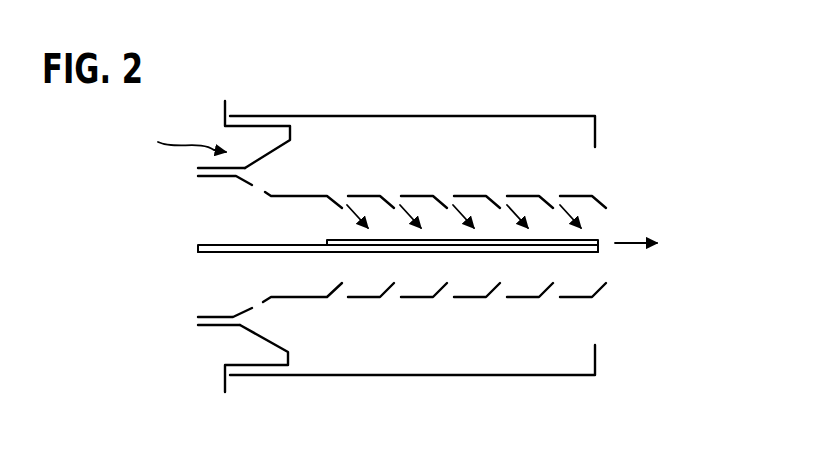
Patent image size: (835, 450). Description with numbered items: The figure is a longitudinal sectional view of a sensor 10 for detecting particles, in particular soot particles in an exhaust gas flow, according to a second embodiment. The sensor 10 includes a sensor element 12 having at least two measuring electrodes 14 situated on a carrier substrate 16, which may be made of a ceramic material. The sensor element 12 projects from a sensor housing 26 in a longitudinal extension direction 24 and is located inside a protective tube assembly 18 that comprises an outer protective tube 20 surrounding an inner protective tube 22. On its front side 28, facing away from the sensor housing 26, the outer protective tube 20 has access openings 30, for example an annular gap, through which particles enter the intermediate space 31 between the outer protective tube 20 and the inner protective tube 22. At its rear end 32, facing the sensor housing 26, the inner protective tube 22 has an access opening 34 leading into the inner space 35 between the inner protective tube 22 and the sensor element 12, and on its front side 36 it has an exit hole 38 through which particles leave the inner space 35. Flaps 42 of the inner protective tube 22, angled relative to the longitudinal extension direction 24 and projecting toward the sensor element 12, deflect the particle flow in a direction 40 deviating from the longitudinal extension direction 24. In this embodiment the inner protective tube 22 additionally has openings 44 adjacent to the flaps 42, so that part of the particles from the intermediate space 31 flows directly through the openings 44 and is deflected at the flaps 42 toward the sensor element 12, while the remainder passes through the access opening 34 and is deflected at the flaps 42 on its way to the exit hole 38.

The sensor 10 is at (578, 72).
The sensor element 12 is at (255, 252).
The measuring electrodes 14 is at (565, 238).
The carrier substrate 16 is at (587, 252).
The protective tube assembly 18 is at (505, 175).
The outer protective tube 20 is at (598, 140).
The inner protective tube 22 is at (610, 207).
The longitudinal extension direction 24 is at (632, 245).
The sensor housing 26 is at (177, 137).
The front side 28 is at (598, 130).
The access openings 30 is at (597, 173).
The intermediate space 31 is at (553, 138).
The rear end 32 is at (213, 176).
The access opening 34 is at (257, 190).
The inner space 35 is at (302, 212).
The front side 36 is at (608, 285).
The exit hole 38 is at (610, 220).
The direction 40 is at (413, 205).
The flaps 42 is at (340, 203).
The openings 44 is at (348, 196).